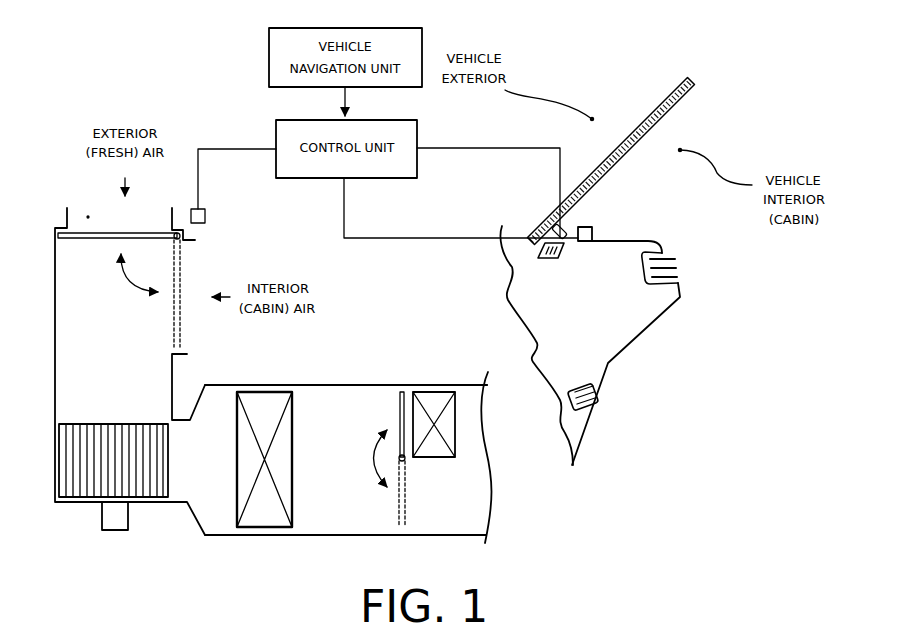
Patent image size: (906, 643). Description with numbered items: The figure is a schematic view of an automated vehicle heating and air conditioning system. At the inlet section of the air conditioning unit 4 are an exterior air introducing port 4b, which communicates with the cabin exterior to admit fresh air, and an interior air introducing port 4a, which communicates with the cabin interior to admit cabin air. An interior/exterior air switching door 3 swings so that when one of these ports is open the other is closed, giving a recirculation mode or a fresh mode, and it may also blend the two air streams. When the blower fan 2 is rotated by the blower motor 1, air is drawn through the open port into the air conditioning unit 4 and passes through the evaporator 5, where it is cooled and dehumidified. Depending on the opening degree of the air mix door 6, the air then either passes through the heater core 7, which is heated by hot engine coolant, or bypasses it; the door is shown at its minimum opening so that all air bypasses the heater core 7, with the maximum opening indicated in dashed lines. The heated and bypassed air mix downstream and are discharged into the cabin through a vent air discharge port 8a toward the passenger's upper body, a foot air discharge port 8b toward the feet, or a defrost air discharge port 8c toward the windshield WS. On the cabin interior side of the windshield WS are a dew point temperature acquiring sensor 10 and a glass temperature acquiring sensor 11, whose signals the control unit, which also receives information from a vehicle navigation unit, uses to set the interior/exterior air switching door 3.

The blower motor 1 is at (118, 517).
The blower fan 2 is at (85, 430).
The interior/exterior air switching door 3 is at (148, 232).
The air conditioning unit 4 is at (318, 385).
The interior air introducing port 4a is at (187, 285).
The exterior air introducing port 4b is at (88, 217).
The evaporator 5 is at (292, 492).
The air mix door 6 is at (398, 395).
The heater core 7 is at (441, 458).
The vent air discharge port 8a is at (684, 265).
The foot air discharge port 8b is at (609, 402).
The defrost air discharge port 8c is at (571, 259).
The dew point temperature acquiring sensor 10 is at (595, 233).
The glass temperature acquiring sensor 11 is at (566, 224).
The windshield WS is at (660, 102).